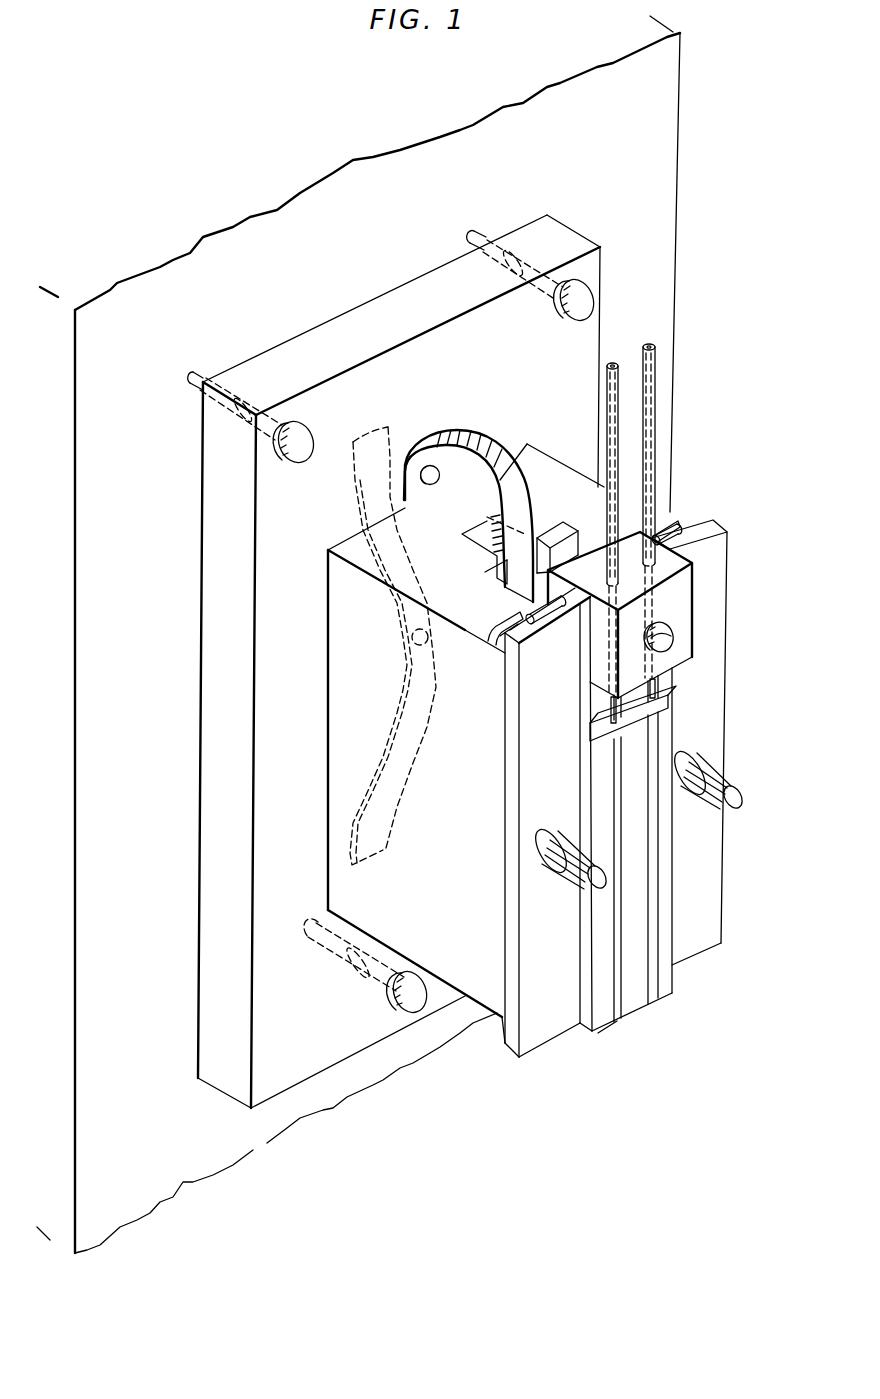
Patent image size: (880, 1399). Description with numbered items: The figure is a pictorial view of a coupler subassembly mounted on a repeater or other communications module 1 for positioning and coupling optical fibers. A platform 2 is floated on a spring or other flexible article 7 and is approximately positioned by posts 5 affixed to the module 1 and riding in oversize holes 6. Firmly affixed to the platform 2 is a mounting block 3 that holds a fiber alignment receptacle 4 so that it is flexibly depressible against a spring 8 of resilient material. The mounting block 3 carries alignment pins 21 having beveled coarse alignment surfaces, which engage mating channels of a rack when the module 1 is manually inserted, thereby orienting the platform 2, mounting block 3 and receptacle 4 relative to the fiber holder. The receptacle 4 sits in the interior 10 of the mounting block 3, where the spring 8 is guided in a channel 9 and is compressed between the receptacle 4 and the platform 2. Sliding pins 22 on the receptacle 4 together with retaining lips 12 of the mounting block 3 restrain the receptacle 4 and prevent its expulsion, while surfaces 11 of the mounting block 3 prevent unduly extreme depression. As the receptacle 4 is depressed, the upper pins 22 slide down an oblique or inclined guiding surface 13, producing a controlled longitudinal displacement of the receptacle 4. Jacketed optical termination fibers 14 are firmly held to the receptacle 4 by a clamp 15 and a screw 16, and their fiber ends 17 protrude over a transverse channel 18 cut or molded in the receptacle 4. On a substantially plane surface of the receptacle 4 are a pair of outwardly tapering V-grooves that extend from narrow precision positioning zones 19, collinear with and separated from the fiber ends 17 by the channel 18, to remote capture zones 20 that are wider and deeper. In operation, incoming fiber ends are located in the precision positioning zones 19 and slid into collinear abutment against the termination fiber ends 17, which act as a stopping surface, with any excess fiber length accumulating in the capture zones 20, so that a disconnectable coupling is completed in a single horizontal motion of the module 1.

The communications module 1 is at (190, 255).
The platform 2 is at (365, 308).
The mounting block 3 is at (533, 460).
The fiber alignment receptacle 4 is at (637, 870).
The posts 5 is at (282, 453).
The oversize holes 6 is at (250, 420).
The spring or other flexible article 7 is at (396, 437).
The spring 8 is at (475, 432).
The channel 9 is at (478, 531).
The interior 10 is at (553, 543).
The surfaces 11 is at (497, 572).
The retaining lips 12 is at (523, 630).
The inclined guiding surface 13 is at (487, 626).
The jacketed optical termination fibers 14 is at (618, 372).
The clamp 15 is at (688, 602).
The screw 16 is at (668, 634).
The fiber ends 17 is at (613, 712).
The transverse channel 18 is at (590, 732).
The precision positioning zones 19 is at (613, 760).
The capture zones 20 is at (623, 1013).
The alignment pins 21 is at (565, 858).
The sliding pins 22 is at (525, 618).